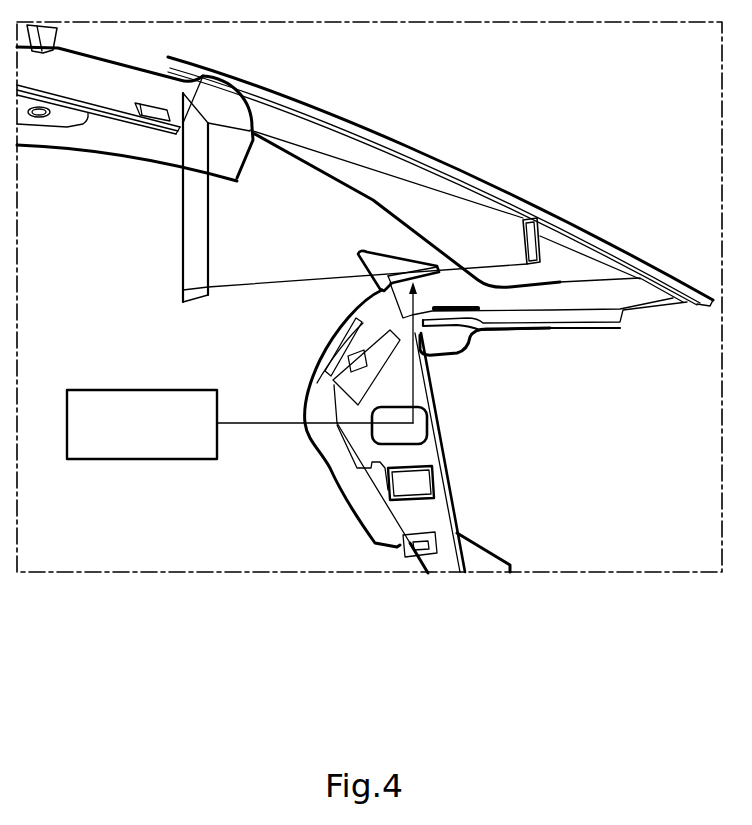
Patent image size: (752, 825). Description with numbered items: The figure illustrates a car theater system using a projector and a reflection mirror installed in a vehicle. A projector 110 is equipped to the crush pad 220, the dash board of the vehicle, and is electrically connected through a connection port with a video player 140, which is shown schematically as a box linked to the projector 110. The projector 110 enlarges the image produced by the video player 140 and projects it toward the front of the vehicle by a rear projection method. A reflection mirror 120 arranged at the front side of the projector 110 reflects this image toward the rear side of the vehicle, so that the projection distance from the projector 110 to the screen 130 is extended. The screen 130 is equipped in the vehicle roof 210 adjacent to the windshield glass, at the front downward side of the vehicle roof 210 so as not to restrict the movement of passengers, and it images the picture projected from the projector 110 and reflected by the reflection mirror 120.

The projector 110 is at (403, 266).
The reflection mirror 120 is at (530, 217).
The screen 130 is at (190, 273).
The video player 140 is at (218, 390).
The vehicle roof 210 is at (370, 133).
The crush pad 220 is at (317, 383).